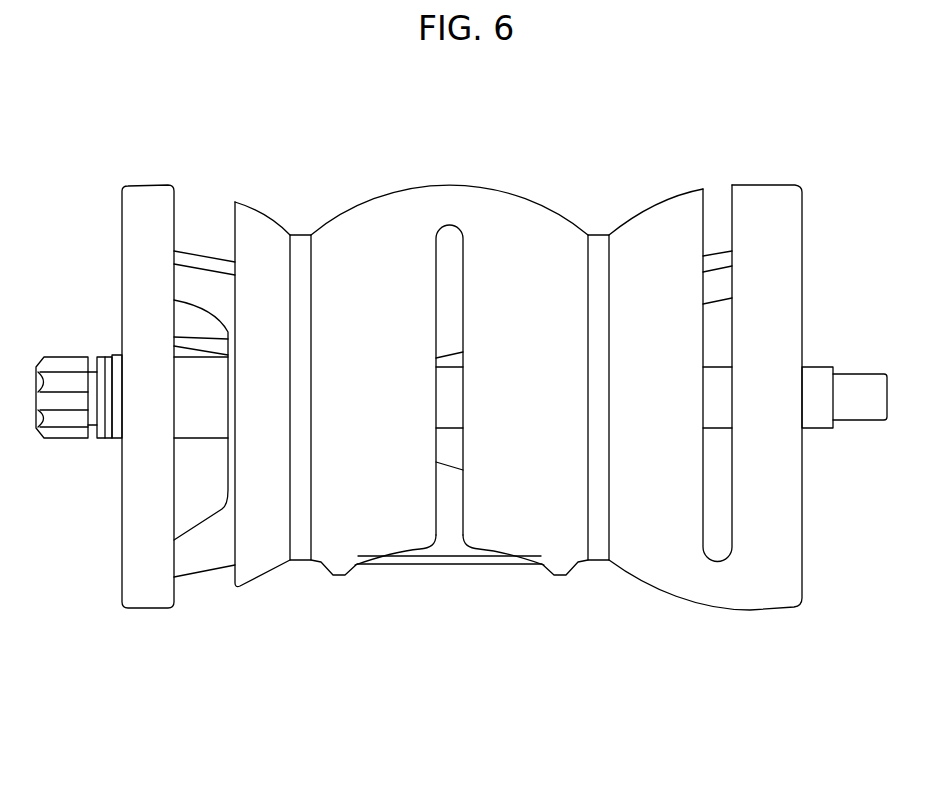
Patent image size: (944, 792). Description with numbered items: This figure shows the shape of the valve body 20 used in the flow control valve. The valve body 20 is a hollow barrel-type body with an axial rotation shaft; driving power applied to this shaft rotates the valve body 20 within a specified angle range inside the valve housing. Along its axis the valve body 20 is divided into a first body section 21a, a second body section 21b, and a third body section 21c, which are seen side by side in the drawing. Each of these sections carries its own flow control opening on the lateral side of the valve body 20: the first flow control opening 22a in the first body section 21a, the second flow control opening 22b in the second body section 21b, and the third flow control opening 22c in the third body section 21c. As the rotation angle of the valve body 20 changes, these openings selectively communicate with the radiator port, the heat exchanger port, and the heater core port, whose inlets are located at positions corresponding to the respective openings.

The valve body 20 is at (567, 598).
The first body section 21a is at (301, 235).
The second body section 21b is at (599, 235).
The third body section 21c is at (802, 185).
The first flow control opening 22a is at (233, 526).
The second flow control opening 22b is at (463, 487).
The third flow control opening 22c is at (732, 493).